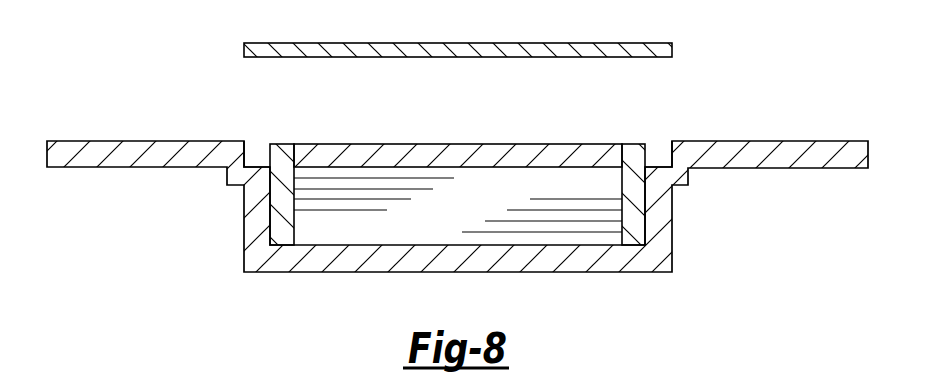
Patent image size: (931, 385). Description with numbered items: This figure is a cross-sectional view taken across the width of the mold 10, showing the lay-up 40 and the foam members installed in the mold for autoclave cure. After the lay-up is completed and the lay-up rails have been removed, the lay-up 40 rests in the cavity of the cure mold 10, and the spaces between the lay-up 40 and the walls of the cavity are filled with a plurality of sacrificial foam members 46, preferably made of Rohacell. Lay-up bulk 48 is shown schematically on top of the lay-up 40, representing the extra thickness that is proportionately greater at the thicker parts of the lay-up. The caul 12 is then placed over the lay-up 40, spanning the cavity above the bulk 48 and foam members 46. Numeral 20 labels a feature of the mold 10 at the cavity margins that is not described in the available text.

The mold 10 is at (788, 168).
The caul 12 is at (338, 43).
The recess notch 20 is at (263, 167).
The lay-up 40 is at (550, 230).
The sacrificial foam members 46 is at (282, 152).
The lay-up bulk 48 is at (390, 150).